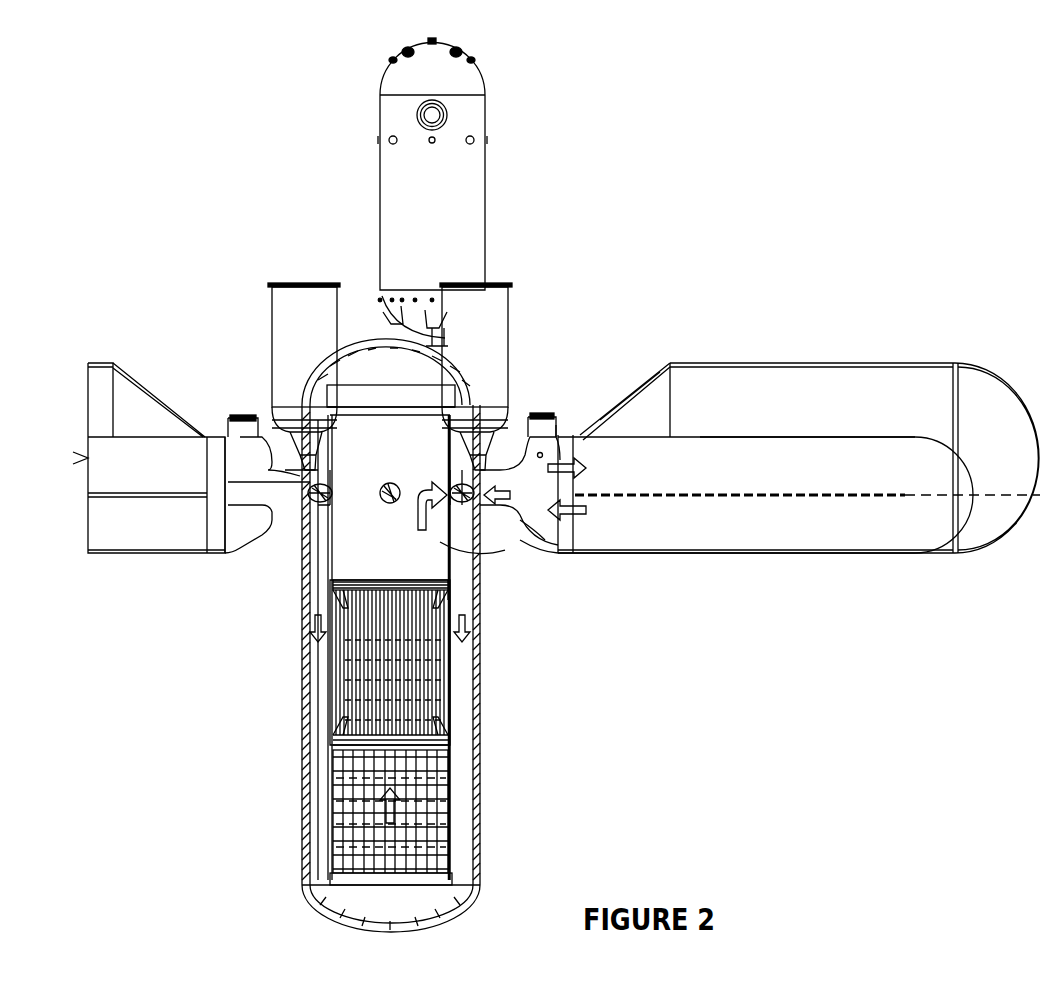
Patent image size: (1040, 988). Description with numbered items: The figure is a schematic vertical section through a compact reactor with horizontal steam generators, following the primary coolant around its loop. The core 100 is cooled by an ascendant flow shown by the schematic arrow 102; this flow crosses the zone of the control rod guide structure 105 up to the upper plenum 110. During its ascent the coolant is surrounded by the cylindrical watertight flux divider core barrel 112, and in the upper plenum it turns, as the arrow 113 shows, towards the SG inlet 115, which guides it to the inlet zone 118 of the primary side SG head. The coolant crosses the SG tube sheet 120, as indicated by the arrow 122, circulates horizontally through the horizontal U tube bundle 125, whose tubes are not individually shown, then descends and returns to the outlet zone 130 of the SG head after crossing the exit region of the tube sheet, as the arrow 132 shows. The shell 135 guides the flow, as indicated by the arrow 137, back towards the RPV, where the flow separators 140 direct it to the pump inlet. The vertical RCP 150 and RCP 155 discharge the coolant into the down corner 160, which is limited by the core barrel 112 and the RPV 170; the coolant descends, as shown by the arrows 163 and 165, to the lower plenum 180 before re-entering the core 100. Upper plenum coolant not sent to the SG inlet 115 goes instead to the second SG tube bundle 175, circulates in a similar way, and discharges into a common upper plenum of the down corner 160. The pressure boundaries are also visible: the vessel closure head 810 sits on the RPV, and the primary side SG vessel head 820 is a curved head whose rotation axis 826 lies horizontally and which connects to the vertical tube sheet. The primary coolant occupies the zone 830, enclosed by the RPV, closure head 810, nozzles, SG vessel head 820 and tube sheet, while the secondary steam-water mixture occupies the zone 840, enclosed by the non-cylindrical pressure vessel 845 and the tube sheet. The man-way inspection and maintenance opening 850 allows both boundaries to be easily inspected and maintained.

The core 100 is at (358, 833).
The ascendant cooling flow arrow 102 is at (425, 818).
The control rod guide structure 105 is at (452, 705).
The upper plenum 110 is at (330, 577).
The flux divider core barrel 112 is at (300, 548).
The turning flow arrow 113 is at (413, 522).
The SG inlet 115 is at (452, 542).
The inlet zone 118 is at (537, 413).
The SG tube sheet 120 is at (573, 437).
The tube sheet crossing arrow 122 is at (588, 460).
The horizontal U tube bundle 125 is at (843, 450).
The outlet zone 130 is at (545, 525).
The return flow arrow 132 is at (588, 516).
The shell 135 is at (540, 548).
The shell-guided flow arrow 137 is at (455, 458).
The flow separators 140 is at (497, 528).
The vertical RCP 150 is at (493, 300).
The vertical RCP 155 is at (283, 320).
The down corner 160 is at (305, 668).
The descending flow arrow 163 is at (305, 625).
The descending flow arrow 165 is at (470, 628).
The RPV 170 is at (303, 708).
The second SG tube bundle 175 is at (172, 447).
The lower plenum 180 is at (355, 897).
The vessel closure head 810 is at (462, 380).
The primary side SG vessel head 820 is at (525, 540).
The rotation axis 826 is at (780, 497).
The primary system coolant zone 830 is at (452, 597).
The secondary system steam-water mixture zone 840 is at (755, 395).
The non-cylindrical pressure vessel 845 is at (560, 430).
The man-way inspection and maintenance opening 850 is at (648, 375).